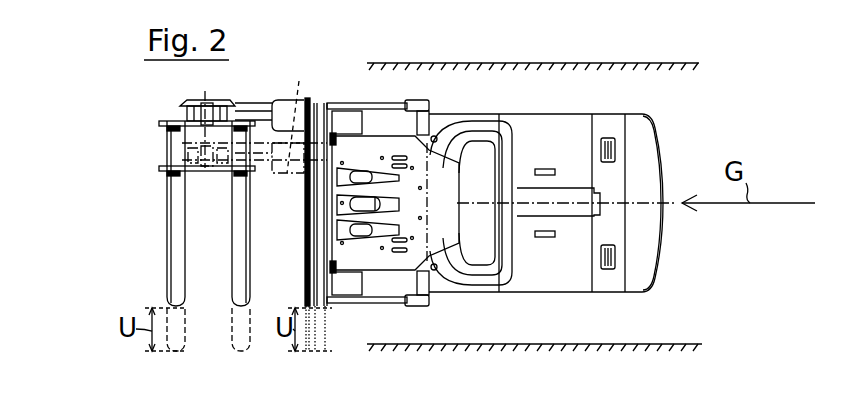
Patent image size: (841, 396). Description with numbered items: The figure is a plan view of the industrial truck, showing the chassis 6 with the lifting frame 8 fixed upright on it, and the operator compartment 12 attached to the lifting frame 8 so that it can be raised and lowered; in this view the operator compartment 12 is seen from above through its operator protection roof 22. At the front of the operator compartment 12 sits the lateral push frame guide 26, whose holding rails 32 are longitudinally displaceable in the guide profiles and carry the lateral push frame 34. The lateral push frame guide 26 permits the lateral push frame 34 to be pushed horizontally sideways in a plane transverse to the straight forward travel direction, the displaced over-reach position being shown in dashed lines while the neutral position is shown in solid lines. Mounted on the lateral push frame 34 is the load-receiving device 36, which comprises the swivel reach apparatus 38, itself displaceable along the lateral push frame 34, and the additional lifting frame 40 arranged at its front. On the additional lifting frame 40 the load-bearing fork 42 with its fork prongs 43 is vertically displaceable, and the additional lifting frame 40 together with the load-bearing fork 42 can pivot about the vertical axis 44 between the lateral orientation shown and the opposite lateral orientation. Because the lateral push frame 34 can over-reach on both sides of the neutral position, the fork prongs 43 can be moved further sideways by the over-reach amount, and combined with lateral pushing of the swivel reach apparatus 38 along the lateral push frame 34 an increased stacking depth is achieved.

The chassis 6 is at (548, 262).
The lifting frame 8 is at (473, 130).
The operator compartment 12 is at (377, 264).
The operator protection roof 22 is at (408, 175).
The lateral push frame guide 26 is at (331, 265).
The holding rails 32 is at (333, 137).
The lateral push frame 34 is at (303, 241).
The load-receiving device 36 is at (262, 92).
The swivel reach apparatus 38 is at (273, 98).
The additional lifting frame 40 is at (182, 103).
The load-bearing fork 42 is at (170, 240).
The fork prongs 43 is at (237, 326).
The vertical axis 44 is at (200, 100).